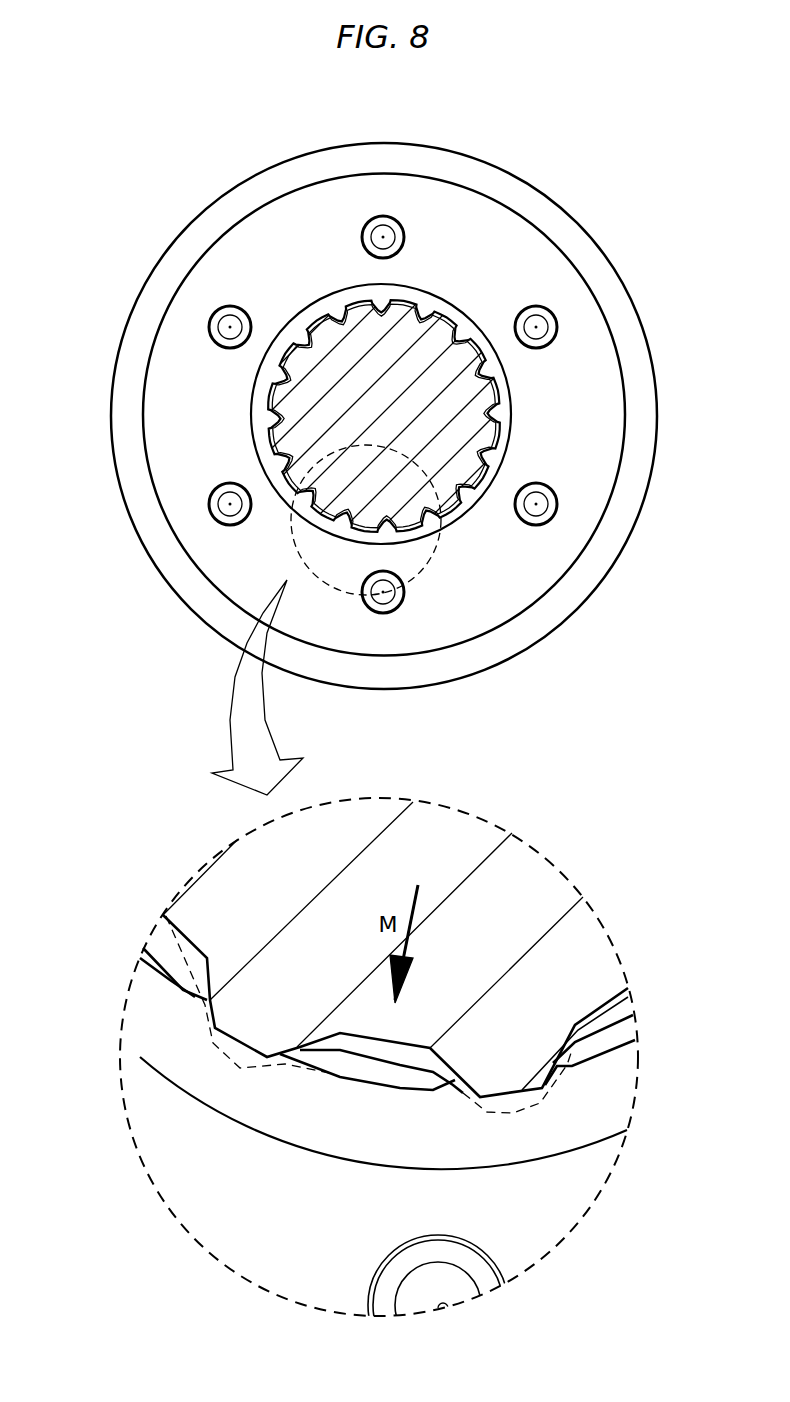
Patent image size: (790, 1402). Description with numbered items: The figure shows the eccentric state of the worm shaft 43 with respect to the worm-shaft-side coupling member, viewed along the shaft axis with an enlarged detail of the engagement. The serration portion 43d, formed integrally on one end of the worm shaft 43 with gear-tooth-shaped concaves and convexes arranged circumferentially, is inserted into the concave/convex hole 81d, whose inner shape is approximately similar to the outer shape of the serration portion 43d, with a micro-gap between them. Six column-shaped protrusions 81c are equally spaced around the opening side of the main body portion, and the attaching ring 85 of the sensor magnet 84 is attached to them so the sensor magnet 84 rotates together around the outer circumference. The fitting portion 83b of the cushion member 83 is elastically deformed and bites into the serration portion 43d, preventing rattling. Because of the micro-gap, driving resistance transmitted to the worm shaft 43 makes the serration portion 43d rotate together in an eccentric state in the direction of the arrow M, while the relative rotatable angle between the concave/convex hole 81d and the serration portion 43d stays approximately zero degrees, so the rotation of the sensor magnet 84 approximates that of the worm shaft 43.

The worm shaft 43 is at (425, 385).
The serration portion 43d is at (500, 390).
The protrusions 81c is at (383, 232).
The concave/convex hole 81d is at (478, 458).
The cushion member 83 is at (289, 320).
The fitting portion 83b is at (256, 431).
The sensor magnet 84 is at (430, 165).
The attaching ring 85 is at (176, 379).